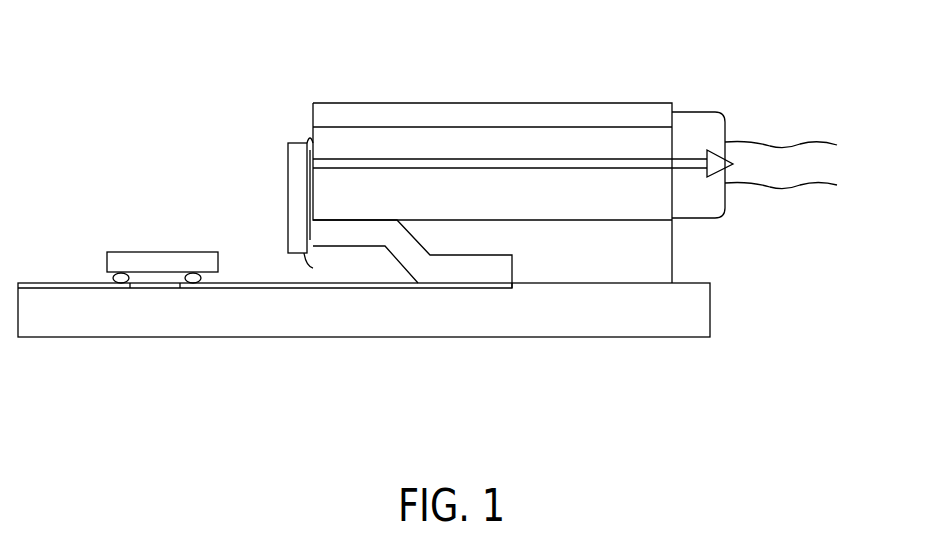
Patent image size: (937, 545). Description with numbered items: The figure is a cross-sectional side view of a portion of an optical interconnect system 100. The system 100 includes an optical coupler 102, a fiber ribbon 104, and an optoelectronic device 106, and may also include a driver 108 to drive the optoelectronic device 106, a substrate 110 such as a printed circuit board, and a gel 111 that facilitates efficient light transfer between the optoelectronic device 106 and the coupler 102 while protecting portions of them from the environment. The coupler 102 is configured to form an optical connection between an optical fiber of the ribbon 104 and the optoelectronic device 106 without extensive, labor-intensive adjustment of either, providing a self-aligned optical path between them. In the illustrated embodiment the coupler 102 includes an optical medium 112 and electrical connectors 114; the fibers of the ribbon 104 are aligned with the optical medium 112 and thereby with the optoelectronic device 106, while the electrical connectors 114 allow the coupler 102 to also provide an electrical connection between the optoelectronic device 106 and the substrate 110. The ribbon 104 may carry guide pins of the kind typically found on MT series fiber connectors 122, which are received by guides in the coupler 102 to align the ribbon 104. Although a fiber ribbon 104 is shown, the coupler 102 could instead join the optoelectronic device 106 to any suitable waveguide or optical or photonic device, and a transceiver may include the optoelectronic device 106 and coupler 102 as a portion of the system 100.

The optical interconnect system 100 is at (152, 77).
The optical coupler 102 is at (547, 100).
The fiber ribbon 104 is at (790, 177).
The optoelectronic device 106 is at (295, 163).
The driver 108 is at (183, 251).
The substrate 110 is at (693, 280).
The gel 111 is at (310, 262).
The optical medium 112 is at (322, 145).
The electrical connectors 114 is at (458, 270).
The fiber connector 122 is at (700, 122).